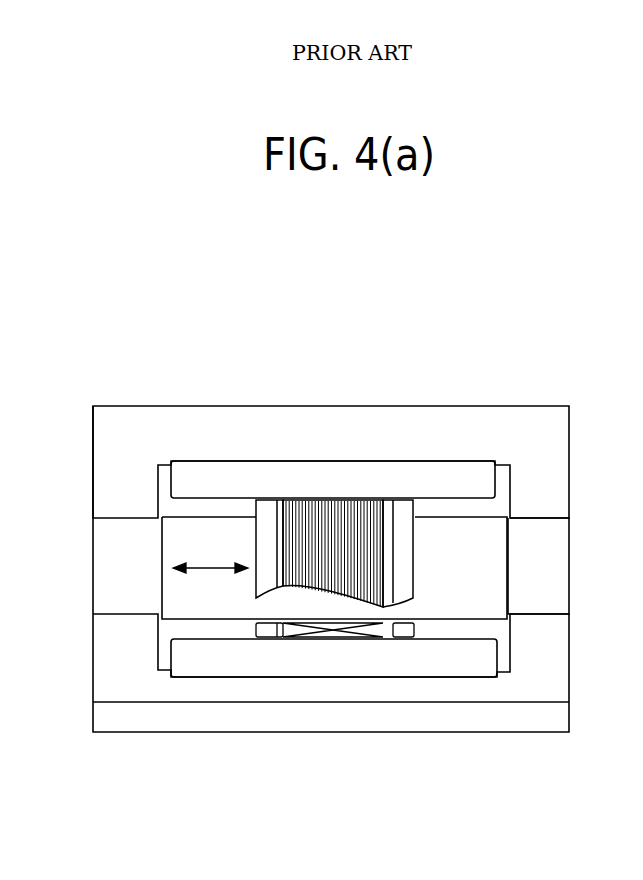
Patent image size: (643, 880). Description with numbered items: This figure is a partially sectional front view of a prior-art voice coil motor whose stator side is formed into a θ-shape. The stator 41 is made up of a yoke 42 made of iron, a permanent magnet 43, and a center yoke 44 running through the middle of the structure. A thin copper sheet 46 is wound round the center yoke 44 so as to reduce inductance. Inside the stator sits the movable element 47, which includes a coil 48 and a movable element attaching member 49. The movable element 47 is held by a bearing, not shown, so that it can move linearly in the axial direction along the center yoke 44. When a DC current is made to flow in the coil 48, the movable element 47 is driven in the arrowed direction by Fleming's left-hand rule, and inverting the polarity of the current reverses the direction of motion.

The stator 41 is at (202, 342).
The yoke 42 is at (141, 442).
The permanent magnet 43 is at (257, 475).
The center yoke 44 is at (112, 548).
The thin copper sheet 46 is at (523, 553).
The movable element 47 is at (378, 330).
The coil 48 is at (346, 512).
The movable element attaching member 49 is at (367, 483).